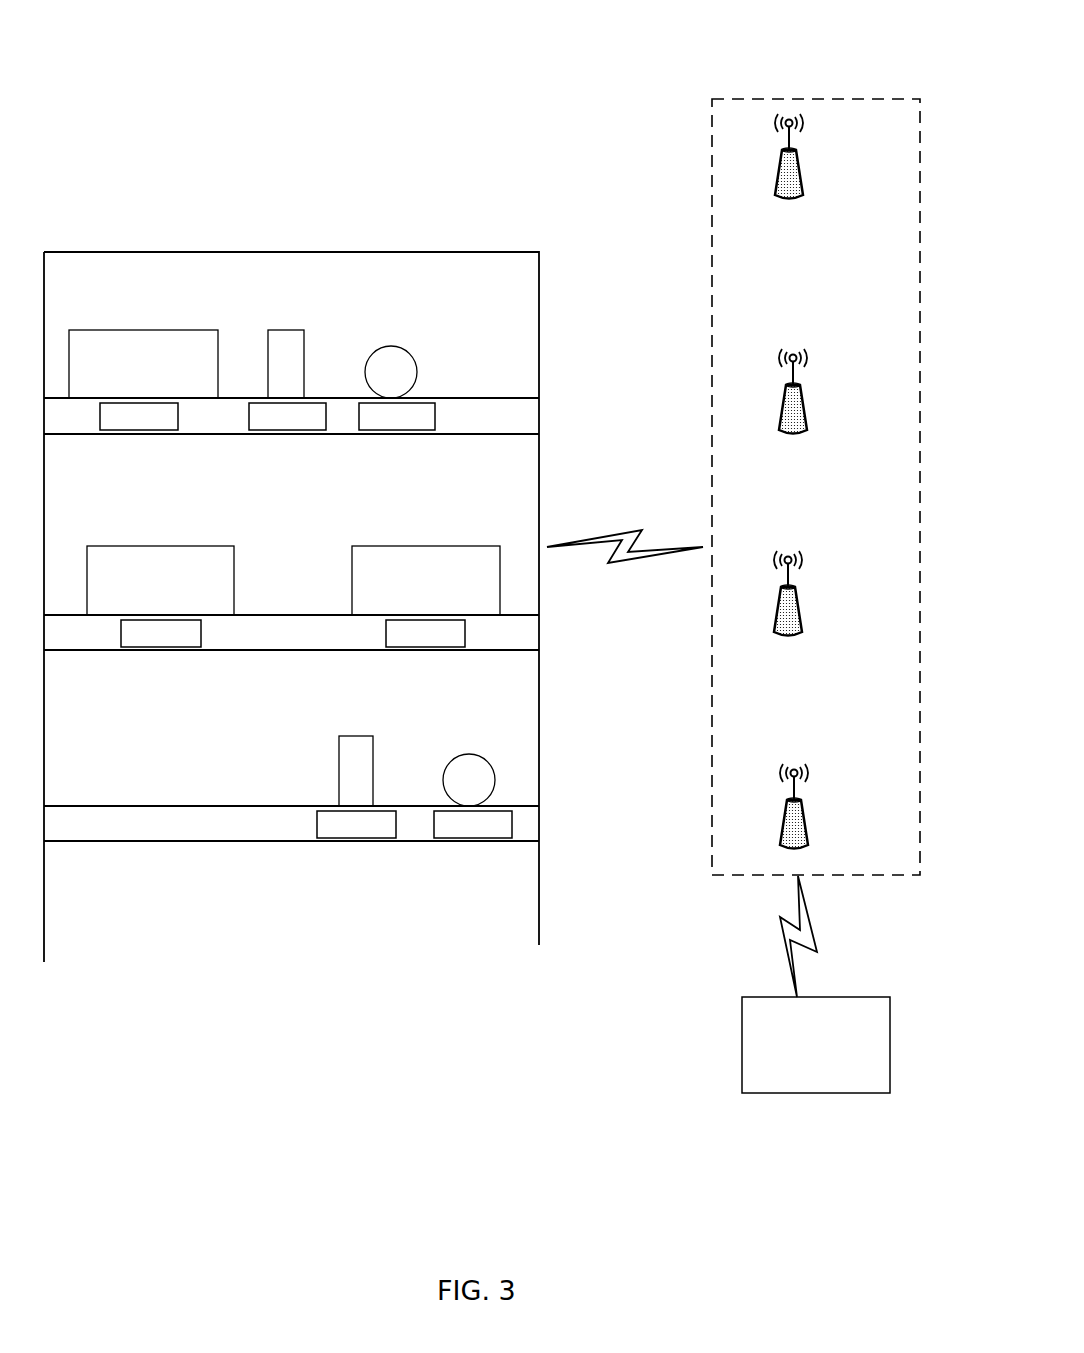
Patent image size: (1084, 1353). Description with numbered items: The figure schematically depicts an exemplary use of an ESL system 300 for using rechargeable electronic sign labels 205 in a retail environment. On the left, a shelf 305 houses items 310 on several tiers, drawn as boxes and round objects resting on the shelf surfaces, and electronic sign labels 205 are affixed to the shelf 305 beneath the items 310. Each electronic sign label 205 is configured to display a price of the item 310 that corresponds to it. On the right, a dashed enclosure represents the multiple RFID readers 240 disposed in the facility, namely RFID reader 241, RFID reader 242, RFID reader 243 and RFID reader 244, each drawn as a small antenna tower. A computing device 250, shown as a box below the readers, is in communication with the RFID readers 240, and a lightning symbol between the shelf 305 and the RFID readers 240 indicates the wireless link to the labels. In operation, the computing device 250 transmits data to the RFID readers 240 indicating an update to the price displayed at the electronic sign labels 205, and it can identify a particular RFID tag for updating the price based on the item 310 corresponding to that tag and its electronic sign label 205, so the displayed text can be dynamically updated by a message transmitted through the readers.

The ESL system 300 is at (276, 35).
The shelf 305 is at (466, 252).
The items 310 is at (147, 330).
The electronic sign labels 205 is at (306, 620).
The RFID readers 240 is at (893, 98).
The RFID reader 241 is at (808, 407).
The RFID reader 242 is at (803, 173).
The RFID reader 243 is at (803, 610).
The RFID reader 244 is at (807, 821).
The computing device 250 is at (816, 1045).